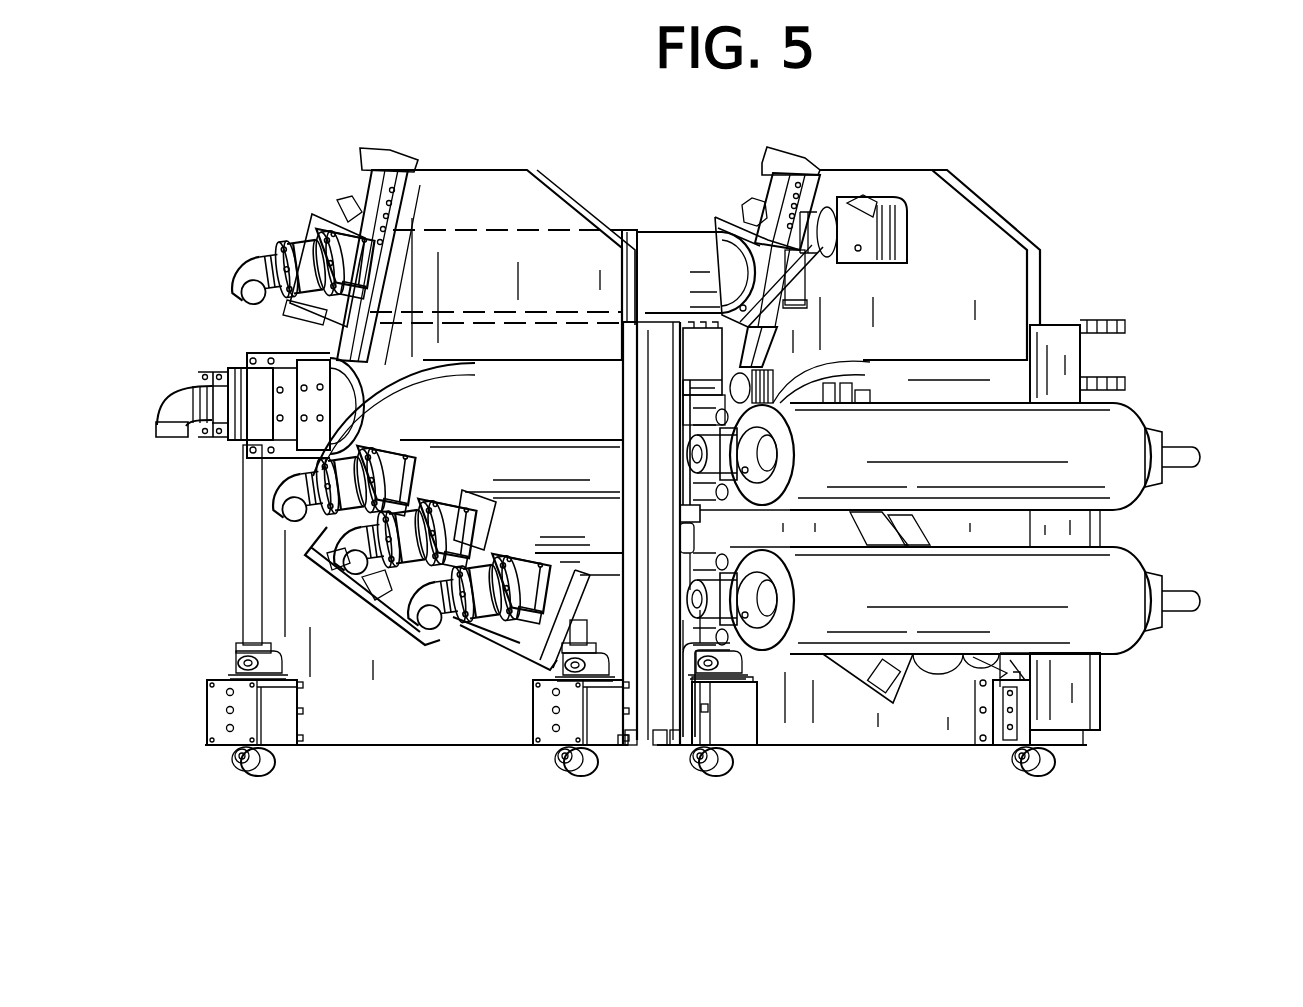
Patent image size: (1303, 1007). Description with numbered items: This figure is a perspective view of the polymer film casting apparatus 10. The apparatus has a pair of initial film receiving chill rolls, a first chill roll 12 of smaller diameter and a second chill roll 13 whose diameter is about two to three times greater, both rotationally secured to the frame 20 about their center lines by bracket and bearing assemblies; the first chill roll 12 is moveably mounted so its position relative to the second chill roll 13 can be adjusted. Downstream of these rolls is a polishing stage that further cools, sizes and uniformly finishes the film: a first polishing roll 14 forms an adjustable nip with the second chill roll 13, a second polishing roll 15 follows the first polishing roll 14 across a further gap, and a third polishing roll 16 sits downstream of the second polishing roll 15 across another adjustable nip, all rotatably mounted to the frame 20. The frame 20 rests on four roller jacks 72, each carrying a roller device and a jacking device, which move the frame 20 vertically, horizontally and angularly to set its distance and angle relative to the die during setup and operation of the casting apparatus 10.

The casting apparatus 10 is at (290, 567).
The first chill roll 12 is at (668, 255).
The second chill roll 13 is at (478, 388).
The first polishing roll 14 is at (517, 467).
The second polishing roll 15 is at (588, 525).
The third polishing roll 16 is at (478, 600).
The frame 20 is at (943, 262).
The roller jacks 72 is at (300, 755).